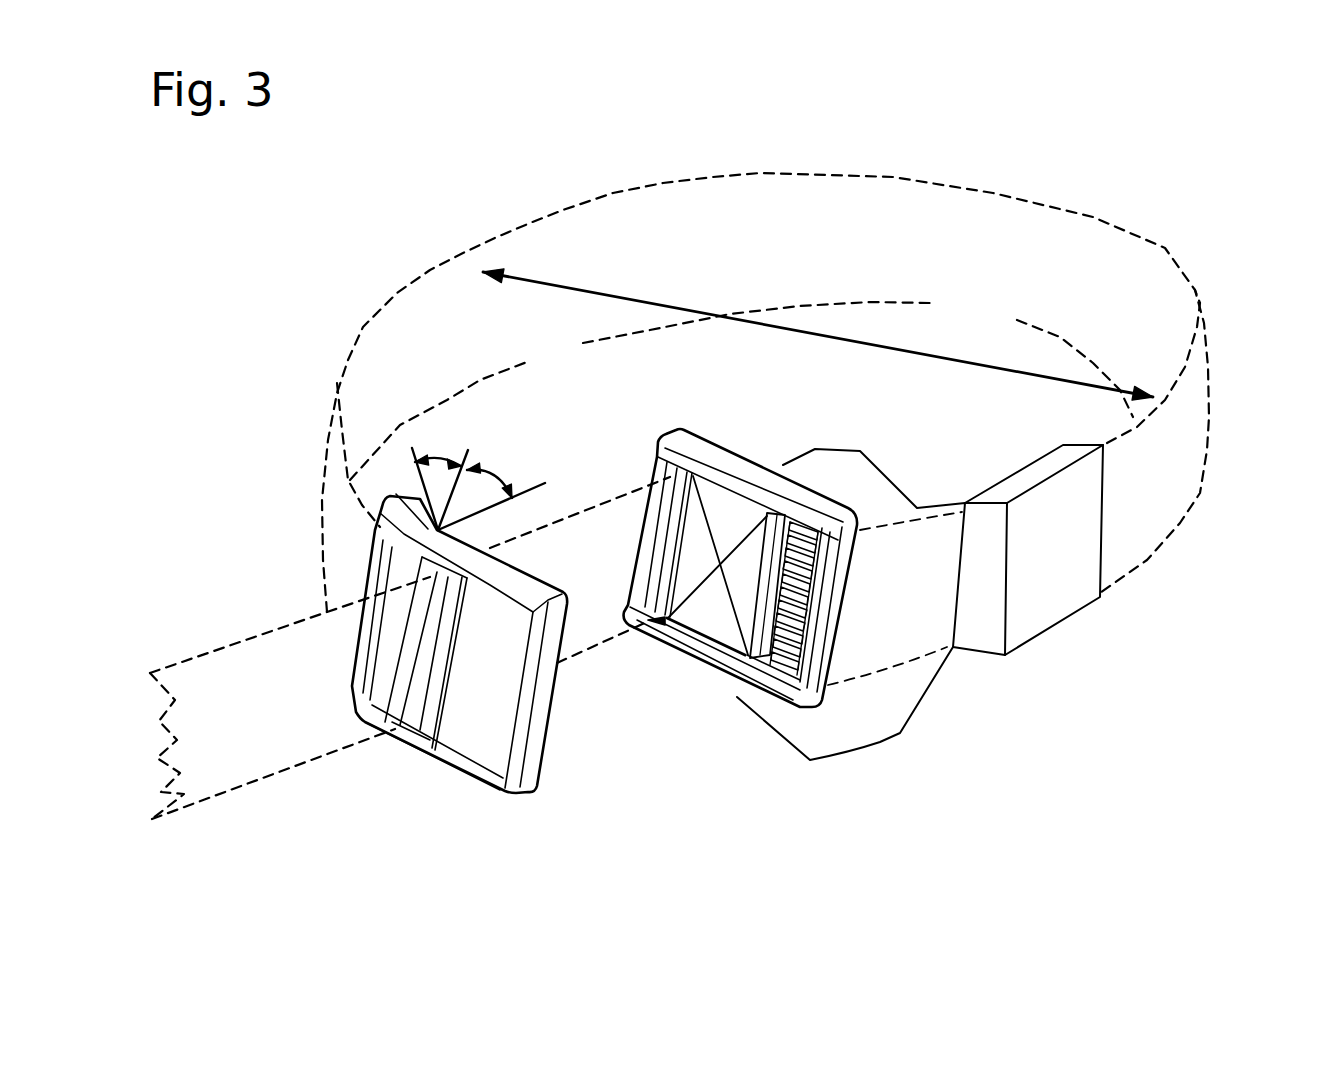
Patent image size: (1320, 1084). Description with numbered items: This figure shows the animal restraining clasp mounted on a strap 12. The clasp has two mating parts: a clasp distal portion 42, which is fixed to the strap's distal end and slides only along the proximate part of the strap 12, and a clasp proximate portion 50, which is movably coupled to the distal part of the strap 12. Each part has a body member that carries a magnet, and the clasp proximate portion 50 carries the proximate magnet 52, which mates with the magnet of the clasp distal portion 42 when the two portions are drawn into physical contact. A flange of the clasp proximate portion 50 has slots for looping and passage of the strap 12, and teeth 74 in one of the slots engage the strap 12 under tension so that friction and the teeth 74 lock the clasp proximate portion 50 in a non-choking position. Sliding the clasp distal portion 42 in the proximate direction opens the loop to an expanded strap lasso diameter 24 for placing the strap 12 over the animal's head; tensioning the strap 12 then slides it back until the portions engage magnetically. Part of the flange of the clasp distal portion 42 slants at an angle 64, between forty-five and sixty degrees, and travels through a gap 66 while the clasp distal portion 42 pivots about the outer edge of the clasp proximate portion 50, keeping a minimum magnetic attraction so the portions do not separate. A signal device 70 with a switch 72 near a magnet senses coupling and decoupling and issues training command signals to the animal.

The strap 12 is at (679, 496).
The expanded strap lasso diameter 24 is at (818, 327).
The clasp distal portion 42 is at (445, 687).
The clasp proximate portion 50 is at (809, 660).
The proximate magnet 52 is at (740, 519).
The angle 64 is at (497, 447).
The gap 66 is at (543, 467).
The signal device 70 is at (996, 602).
The switch 72 is at (675, 679).
The teeth 74 is at (867, 728).